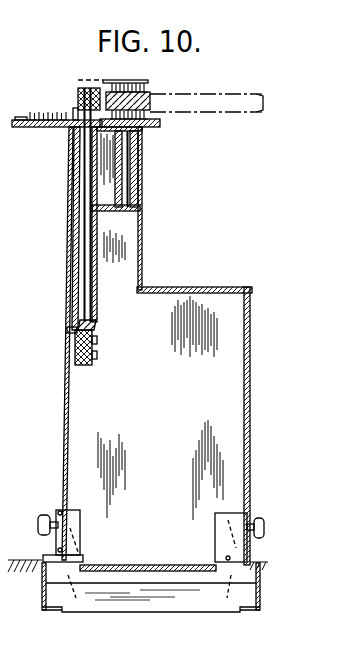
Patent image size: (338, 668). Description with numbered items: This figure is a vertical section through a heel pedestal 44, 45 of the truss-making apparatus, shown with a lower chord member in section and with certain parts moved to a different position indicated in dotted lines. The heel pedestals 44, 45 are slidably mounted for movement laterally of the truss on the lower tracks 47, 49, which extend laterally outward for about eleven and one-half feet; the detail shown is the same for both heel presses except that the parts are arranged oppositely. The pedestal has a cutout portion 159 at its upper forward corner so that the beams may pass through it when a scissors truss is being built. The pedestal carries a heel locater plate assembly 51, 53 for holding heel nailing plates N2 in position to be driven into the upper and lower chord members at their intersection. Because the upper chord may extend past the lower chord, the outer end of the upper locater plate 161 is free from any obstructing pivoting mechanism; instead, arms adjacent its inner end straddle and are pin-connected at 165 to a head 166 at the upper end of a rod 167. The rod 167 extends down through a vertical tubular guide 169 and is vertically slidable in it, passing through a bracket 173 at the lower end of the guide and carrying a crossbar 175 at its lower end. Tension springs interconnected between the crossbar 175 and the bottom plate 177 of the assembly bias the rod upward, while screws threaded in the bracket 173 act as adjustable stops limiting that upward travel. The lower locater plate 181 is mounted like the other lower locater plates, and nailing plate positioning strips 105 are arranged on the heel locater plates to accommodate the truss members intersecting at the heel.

The heel nailing plate N2 is at (135, 78).
The nailing plate positioning strip 105 is at (25, 117).
The upper locater plate 161 is at (42, 127).
The pin connection 165 is at (88, 88).
The head 166 is at (86, 95).
The rod 167 is at (87, 140).
The vertical tubular guide 169 is at (73, 207).
The bracket 173 is at (96, 327).
The crossbar 175 is at (88, 364).
The bottom plate 177 is at (105, 212).
The lower locater plate 181 is at (160, 126).
The cutout portion 159 is at (169, 261).
The heel locater plate assembly 51 is at (157, 208).
The heel locater plate assembly 53 is at (145, 169).
The heel pedestal 44 is at (40, 343).
The heel pedestal 45 is at (65, 407).
The lower track 47 is at (135, 599).
The lower track 49 is at (40, 593).